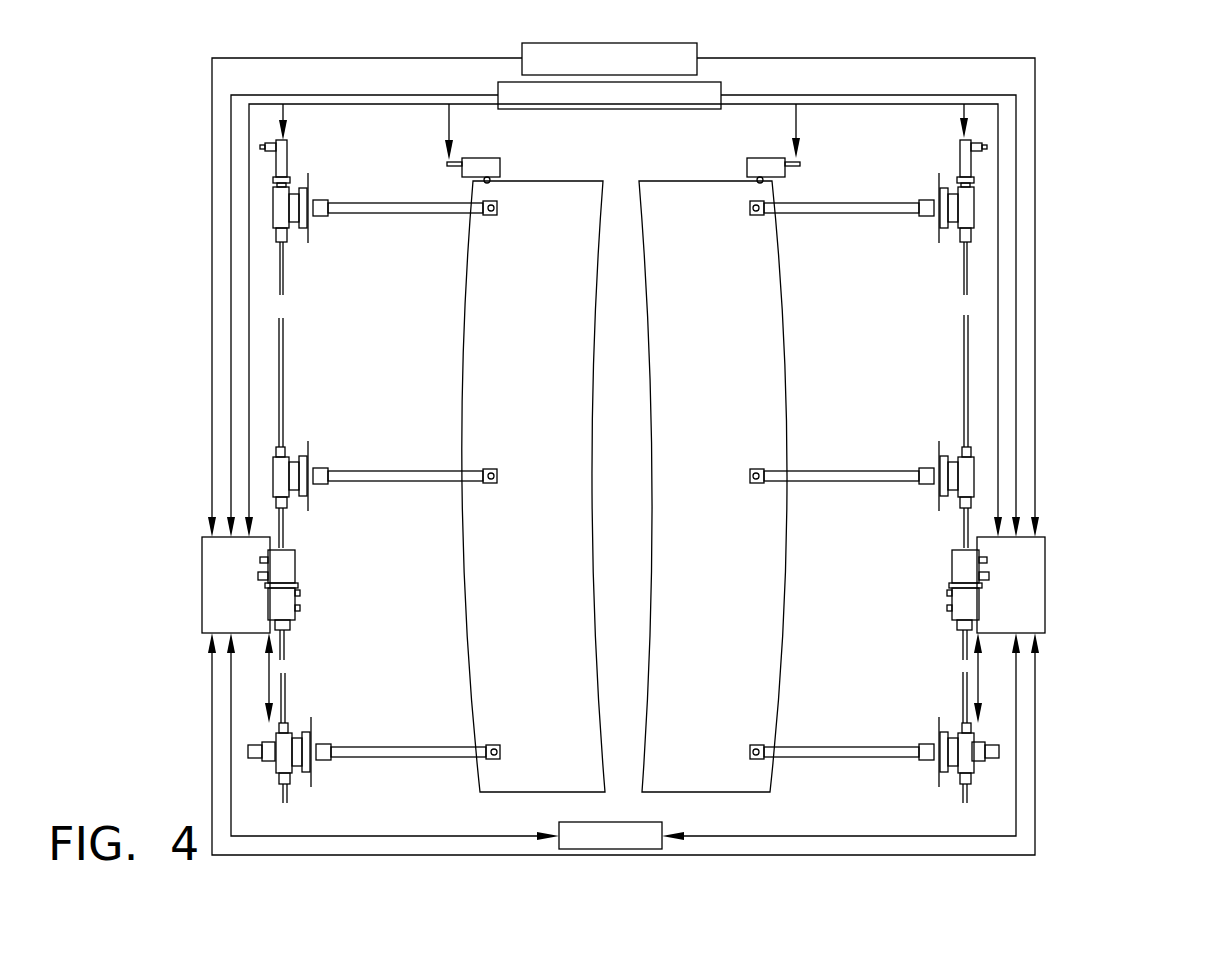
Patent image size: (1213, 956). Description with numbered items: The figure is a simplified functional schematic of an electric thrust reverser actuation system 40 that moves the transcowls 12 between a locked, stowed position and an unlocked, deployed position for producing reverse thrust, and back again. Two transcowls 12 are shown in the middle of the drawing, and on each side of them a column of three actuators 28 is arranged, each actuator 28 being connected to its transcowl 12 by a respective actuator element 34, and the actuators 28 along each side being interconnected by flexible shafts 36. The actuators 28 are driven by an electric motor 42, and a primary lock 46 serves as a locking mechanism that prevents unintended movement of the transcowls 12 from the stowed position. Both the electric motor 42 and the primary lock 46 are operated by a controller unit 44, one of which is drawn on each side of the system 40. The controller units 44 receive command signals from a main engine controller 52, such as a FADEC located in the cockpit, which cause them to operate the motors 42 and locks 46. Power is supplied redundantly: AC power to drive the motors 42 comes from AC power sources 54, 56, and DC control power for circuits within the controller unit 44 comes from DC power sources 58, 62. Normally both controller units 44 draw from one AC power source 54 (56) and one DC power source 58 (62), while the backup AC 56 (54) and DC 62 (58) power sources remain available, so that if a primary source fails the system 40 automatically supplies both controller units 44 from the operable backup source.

The transcowl 12 is at (550, 283).
The actuator 28 is at (290, 230).
The actuator element 34 is at (382, 216).
The flexible shaft 36 is at (283, 358).
The electric thrust reverser actuation system 40 is at (1112, 74).
The electric motor 42 is at (296, 606).
The controller unit 44 is at (243, 595).
The primary lock 46 is at (623, 603).
The main engine controller 52 is at (575, 822).
The AC power source 54 is at (537, 68).
The AC power source 56 is at (521, 66).
The DC power source 58 is at (609, 117).
The DC power source 62 is at (570, 110).